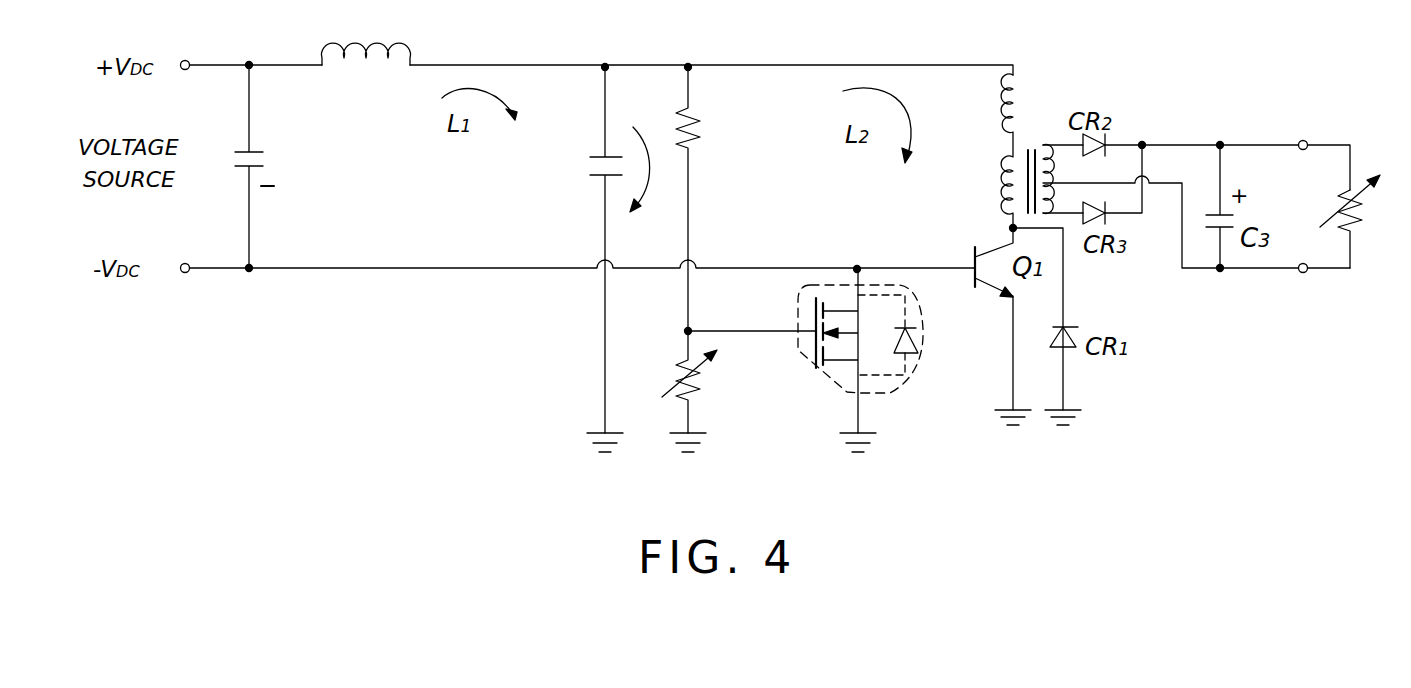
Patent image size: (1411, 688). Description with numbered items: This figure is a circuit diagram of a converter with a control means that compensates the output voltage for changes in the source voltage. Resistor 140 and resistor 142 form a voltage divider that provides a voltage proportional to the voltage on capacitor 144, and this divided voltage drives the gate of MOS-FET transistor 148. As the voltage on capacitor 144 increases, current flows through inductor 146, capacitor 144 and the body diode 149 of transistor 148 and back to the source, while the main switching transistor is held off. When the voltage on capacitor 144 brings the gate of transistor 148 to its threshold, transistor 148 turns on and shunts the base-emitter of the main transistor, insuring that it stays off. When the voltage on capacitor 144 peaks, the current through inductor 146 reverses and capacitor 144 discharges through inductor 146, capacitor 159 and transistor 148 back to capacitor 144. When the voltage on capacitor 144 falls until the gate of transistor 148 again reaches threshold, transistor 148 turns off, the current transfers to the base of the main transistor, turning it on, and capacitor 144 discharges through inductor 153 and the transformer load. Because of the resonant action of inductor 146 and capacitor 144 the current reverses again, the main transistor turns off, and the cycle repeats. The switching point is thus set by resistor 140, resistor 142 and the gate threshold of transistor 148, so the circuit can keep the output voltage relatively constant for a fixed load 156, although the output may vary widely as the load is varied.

The inductor 146 is at (410, 65).
The capacitor 159 is at (243, 151).
The capacitor 144 is at (601, 157).
The resistor 140 is at (693, 143).
The resistor 142 is at (687, 356).
The MOS-FET transistor 148 is at (810, 307).
The body diode 149 is at (903, 329).
The inductor 153 is at (997, 133).
The load 156 is at (1350, 186).